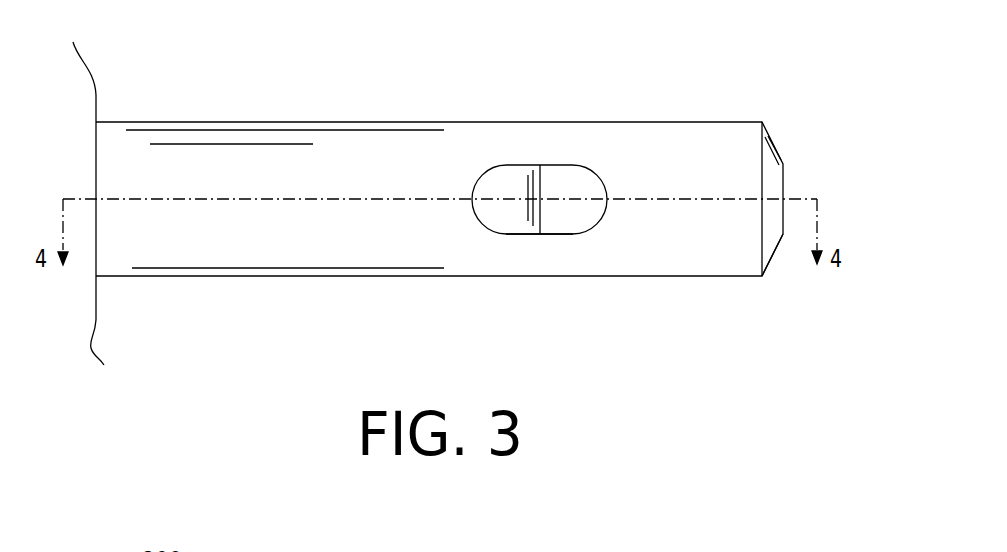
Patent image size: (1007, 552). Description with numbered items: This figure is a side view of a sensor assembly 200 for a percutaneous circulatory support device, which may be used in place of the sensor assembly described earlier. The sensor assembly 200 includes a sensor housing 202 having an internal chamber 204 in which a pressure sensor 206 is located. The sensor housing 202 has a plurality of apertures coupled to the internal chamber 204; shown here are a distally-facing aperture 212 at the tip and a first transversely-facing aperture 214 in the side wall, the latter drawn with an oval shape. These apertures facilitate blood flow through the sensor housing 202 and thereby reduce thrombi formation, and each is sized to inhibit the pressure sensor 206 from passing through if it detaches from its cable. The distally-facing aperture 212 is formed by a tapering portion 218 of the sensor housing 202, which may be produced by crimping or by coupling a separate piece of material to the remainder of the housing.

The sensor assembly 200 is at (247, 75).
The sensor housing 202 is at (683, 121).
The internal chamber 204 is at (570, 175).
The pressure sensor 206 is at (540, 178).
The distally-facing aperture 212 is at (783, 185).
The first transversely-facing aperture 214 is at (565, 235).
The tapering portion 218 is at (770, 258).